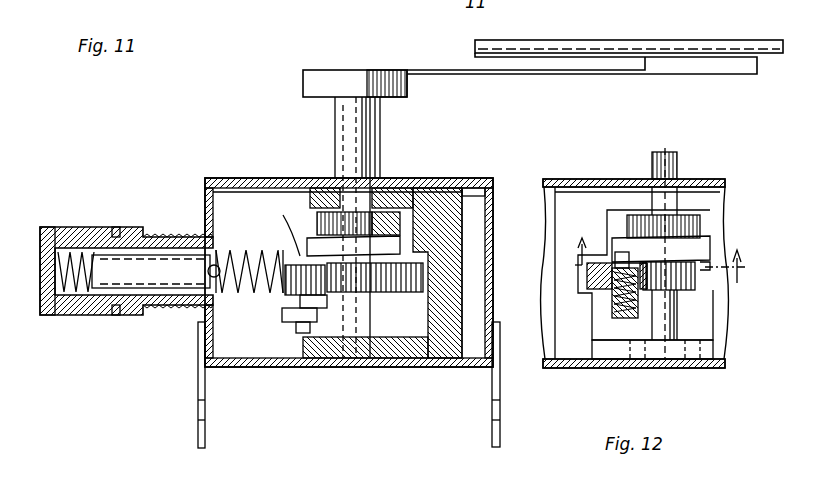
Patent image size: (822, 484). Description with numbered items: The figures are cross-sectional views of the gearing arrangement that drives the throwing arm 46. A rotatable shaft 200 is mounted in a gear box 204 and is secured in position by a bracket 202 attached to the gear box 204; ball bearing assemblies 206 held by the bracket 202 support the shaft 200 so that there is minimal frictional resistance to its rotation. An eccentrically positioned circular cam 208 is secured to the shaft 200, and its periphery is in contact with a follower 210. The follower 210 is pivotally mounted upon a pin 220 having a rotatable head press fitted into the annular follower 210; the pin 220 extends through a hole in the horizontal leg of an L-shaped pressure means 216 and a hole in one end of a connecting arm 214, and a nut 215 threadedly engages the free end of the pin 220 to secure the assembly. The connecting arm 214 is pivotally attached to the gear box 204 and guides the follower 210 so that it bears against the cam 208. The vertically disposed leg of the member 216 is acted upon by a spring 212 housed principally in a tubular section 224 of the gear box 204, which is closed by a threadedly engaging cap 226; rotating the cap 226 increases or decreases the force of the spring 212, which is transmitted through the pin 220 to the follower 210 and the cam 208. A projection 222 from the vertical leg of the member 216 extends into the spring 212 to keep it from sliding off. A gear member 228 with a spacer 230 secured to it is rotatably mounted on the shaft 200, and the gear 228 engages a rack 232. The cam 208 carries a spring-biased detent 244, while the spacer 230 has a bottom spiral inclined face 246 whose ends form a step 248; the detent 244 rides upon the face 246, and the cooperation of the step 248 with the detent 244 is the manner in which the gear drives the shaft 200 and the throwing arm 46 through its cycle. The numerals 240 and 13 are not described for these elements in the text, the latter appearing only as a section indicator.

In FIG. 11, the throwing arm 46 is at (611, 40).
In FIG. 11, the rotatable shaft 200 is at (375, 125).
In FIG. 12, the rotatable shaft 200 is at (662, 152).
In FIG. 11, the bracket 202 is at (447, 358).
In FIG. 12, the bracket 202 is at (580, 200).
In FIG. 11, the gear box 204 is at (490, 200).
In FIG. 12, the gear box 204 is at (548, 179).
In FIG. 11, the ball bearing assemblies 206 is at (382, 190).
In FIG. 12, the ball bearing assemblies 206 is at (705, 179).
In FIG. 11, the circular cam 208 is at (435, 275).
In FIG. 12, the circular cam 208 is at (690, 292).
In FIG. 11, the follower 210 is at (300, 256).
In FIG. 11, the spring 212 is at (78, 250).
In FIG. 11, the connecting arm 214 is at (290, 312).
In FIG. 11, the nut 215 is at (297, 333).
In FIG. 11, the L-shaped pressure means 216 is at (258, 252).
In FIG. 11, the pin 220 is at (300, 270).
In FIG. 11, the projection 222 is at (212, 262).
In FIG. 11, the tubular section 224 is at (160, 305).
In FIG. 11, the cap 226 is at (58, 315).
In FIG. 11, the gear member 228 is at (340, 212).
In FIG. 12, the gear member 228 is at (690, 230).
In FIG. 11, the spacer 230 is at (470, 188).
In FIG. 12, the spacer 230 is at (718, 238).
In FIG. 11, the rack 232 is at (410, 190).
In FIG. 12, the lever plate 240 is at (698, 246).
In FIG. 12, the spring-biased detent 244 is at (612, 305).
In FIG. 11, the spiral inclined face 246 is at (314, 205).
In FIG. 12, the step 248 is at (592, 292).
In FIG. 12, the section line 13 is at (664, 260).